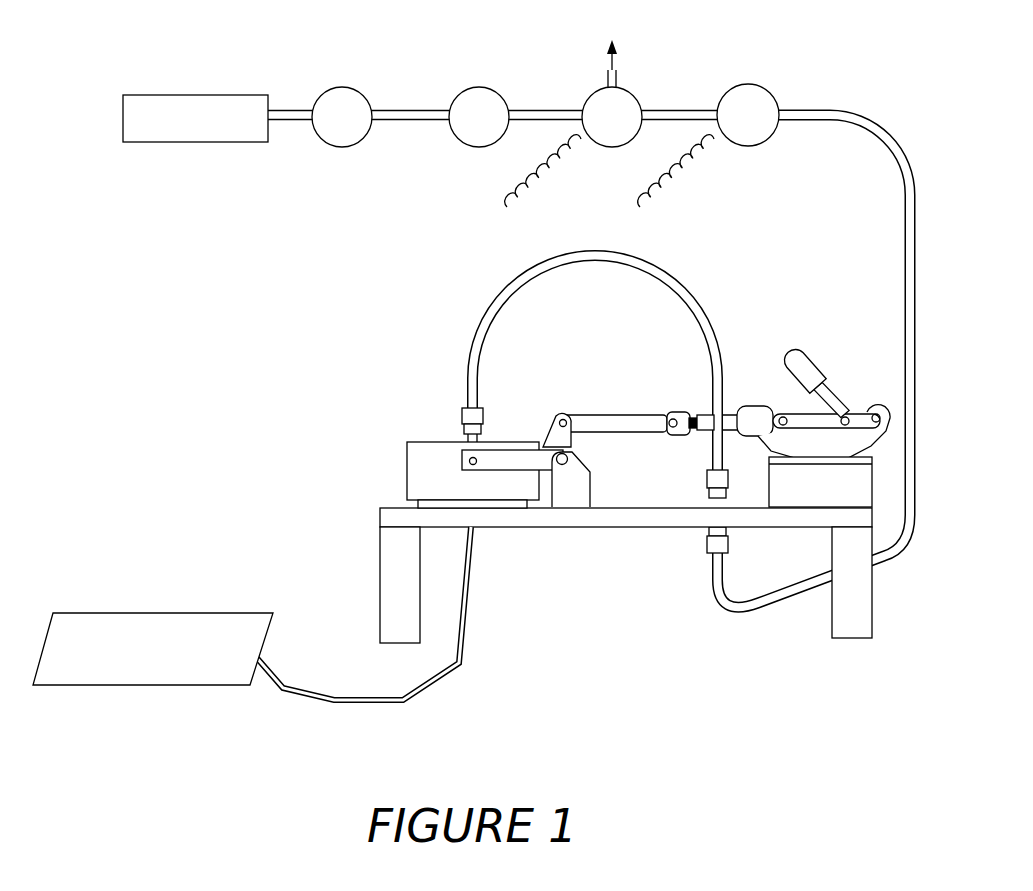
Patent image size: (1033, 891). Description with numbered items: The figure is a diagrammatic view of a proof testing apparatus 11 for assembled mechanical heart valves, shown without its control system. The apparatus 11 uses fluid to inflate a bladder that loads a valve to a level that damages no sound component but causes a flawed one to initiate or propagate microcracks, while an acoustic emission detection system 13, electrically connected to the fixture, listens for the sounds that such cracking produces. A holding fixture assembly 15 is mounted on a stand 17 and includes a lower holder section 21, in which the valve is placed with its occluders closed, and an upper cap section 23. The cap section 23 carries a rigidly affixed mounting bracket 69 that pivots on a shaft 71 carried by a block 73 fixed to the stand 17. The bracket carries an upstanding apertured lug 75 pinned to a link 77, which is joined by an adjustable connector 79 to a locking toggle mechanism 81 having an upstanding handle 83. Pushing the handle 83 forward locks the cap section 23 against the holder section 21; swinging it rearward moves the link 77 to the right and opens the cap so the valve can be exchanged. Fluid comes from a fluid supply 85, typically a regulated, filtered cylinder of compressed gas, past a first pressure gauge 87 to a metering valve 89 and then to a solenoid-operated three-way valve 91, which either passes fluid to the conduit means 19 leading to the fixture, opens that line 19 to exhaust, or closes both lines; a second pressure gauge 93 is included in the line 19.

The proof testing apparatus 11 is at (232, 232).
The acoustic emission detection system 13 is at (100, 680).
The holding fixture assembly 15 is at (436, 438).
The stand 17 is at (603, 517).
The conduit means 19 is at (905, 193).
The holder section 21 is at (510, 505).
The cap section 23 is at (413, 465).
The mounting bracket 69 is at (499, 452).
The shaft 71 is at (568, 461).
The block 73 is at (583, 492).
The upstanding apertured lug 75 is at (555, 445).
The link 77 is at (628, 418).
The adjustable connector 79 is at (730, 418).
The locking toggle mechanism 81 is at (852, 412).
The handle 83 is at (800, 366).
The fluid supply 85 is at (217, 100).
The first pressure gauge 87 is at (347, 95).
The metering valve 89 is at (490, 94).
The solenoid-operated 3-way valve 91 is at (629, 103).
The second pressure gauge 93 is at (755, 92).